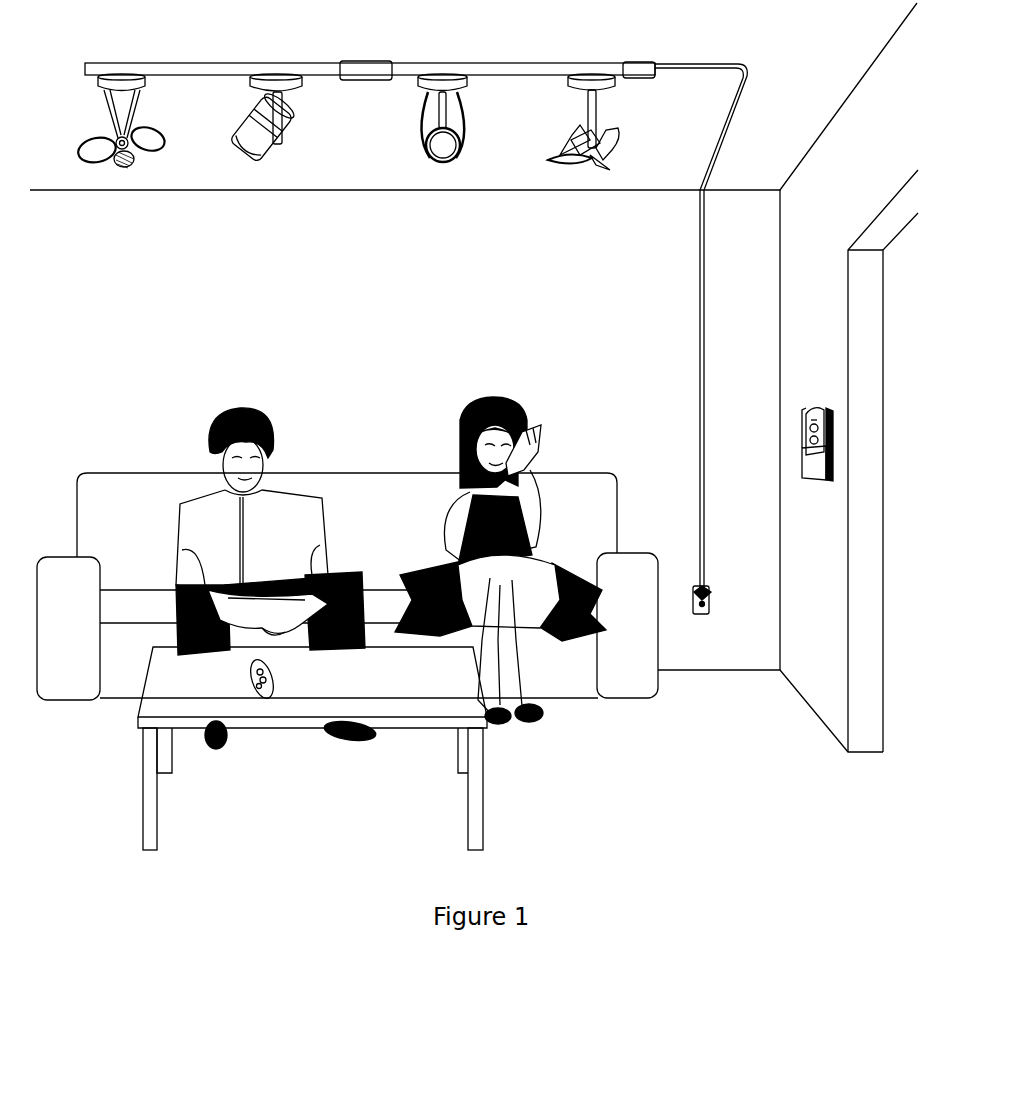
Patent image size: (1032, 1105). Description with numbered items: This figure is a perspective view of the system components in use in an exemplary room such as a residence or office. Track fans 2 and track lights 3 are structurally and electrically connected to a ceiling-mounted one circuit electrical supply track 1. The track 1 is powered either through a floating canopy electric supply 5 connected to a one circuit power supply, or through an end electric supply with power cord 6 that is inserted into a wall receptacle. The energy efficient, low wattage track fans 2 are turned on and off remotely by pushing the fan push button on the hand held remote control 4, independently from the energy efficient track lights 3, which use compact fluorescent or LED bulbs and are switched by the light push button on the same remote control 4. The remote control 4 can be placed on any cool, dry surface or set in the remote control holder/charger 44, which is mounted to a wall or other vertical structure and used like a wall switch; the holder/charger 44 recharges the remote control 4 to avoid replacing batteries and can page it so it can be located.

The one circuit electrical supply track 1 is at (84, 69).
The track fan 2 is at (122, 170).
The track light 3 is at (277, 170).
The hand held remote control 4 is at (268, 707).
The floating canopy electric supply 5 is at (367, 82).
The end electric supply with power cord 6 is at (640, 80).
The remote control holder/charger 44 is at (818, 484).